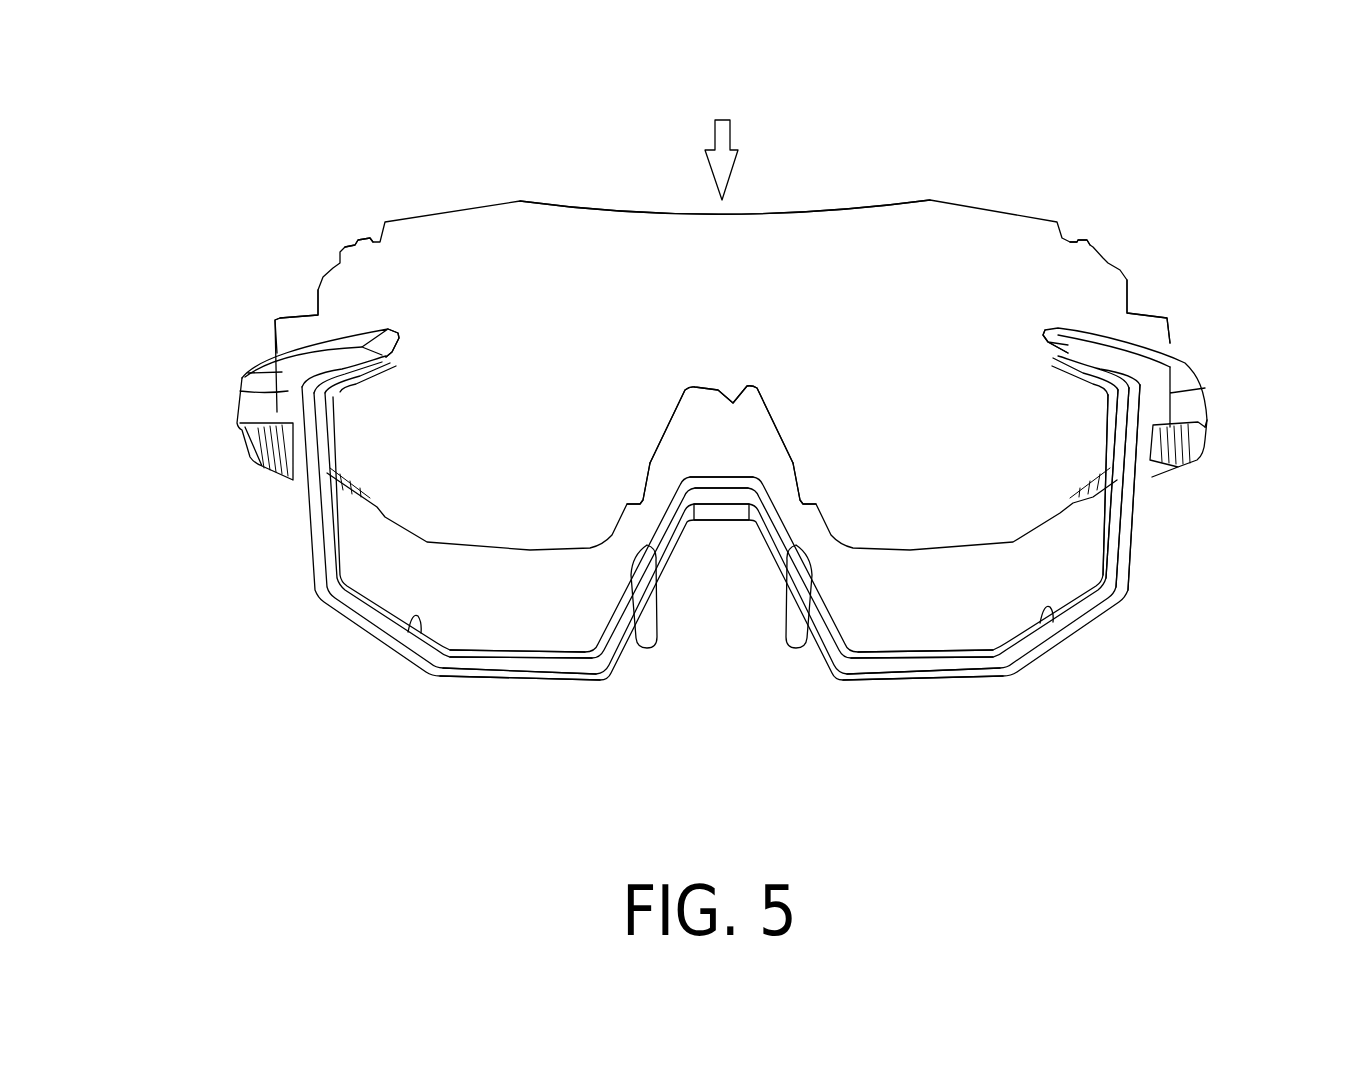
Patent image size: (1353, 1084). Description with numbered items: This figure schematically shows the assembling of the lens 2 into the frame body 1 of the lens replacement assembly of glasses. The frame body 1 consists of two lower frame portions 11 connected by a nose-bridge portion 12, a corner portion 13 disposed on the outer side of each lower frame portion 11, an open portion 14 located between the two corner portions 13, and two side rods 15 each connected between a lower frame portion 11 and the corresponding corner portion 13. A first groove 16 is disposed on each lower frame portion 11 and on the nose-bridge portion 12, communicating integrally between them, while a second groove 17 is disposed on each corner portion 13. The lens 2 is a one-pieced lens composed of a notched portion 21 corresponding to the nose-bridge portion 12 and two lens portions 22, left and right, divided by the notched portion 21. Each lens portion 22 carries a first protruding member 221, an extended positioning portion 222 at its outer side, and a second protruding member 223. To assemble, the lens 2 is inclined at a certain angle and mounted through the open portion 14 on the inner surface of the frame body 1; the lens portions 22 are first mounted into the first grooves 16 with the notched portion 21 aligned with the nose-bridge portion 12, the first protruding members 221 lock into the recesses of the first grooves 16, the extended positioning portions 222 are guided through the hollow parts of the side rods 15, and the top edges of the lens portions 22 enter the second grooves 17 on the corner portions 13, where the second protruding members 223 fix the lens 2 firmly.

The frame body 1 is at (702, 475).
The lower frame portion 11 is at (497, 667).
The nose-bridge portion 12 is at (723, 513).
The corner portion 13 is at (282, 370).
The open portion 14 is at (667, 240).
The side rod 15 is at (1130, 535).
The first groove 16 is at (417, 620).
The second groove 17 is at (393, 347).
The lens 2 is at (690, 411).
The notched portion 21 is at (747, 385).
The lens portion 22 is at (530, 320).
The first protruding member 221 is at (640, 480).
The extended positioning portion 222 is at (275, 320).
The second protruding member 223 is at (357, 247).